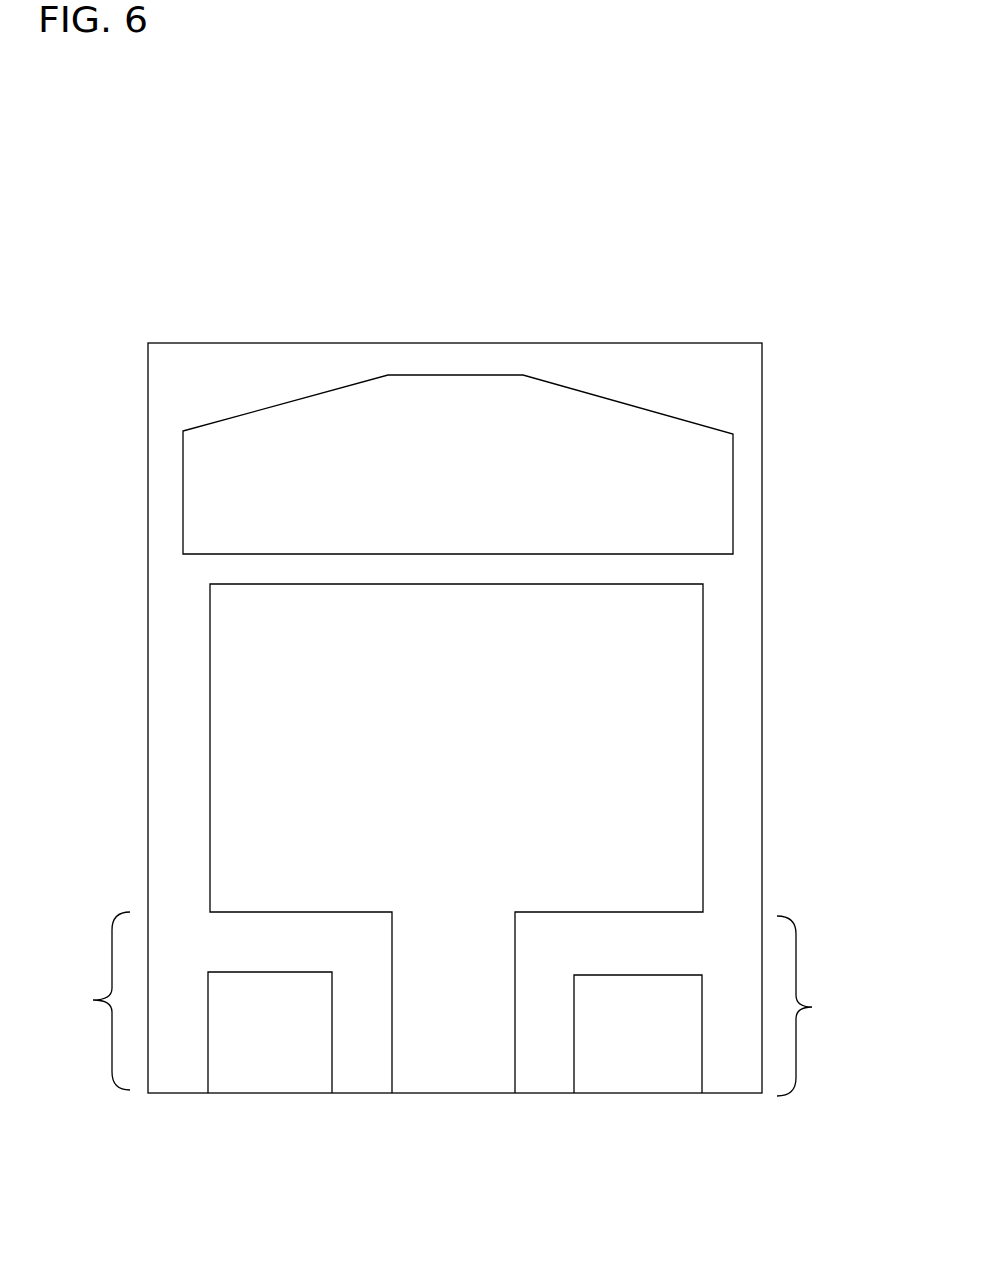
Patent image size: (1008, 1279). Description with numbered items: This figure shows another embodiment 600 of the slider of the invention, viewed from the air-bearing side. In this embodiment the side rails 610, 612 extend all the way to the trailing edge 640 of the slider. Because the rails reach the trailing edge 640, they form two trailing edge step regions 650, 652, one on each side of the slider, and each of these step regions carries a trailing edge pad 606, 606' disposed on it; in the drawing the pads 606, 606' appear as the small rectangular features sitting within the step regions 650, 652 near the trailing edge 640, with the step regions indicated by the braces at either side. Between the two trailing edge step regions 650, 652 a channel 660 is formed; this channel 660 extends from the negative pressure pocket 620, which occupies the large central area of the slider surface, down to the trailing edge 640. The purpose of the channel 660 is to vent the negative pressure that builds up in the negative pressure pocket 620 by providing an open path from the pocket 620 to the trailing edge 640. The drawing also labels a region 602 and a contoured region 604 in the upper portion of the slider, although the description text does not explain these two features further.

The embodiment 600 is at (115, 342).
The region 602 is at (679, 494).
The polygon region 604 is at (163, 477).
The trailing edge pad 606 is at (247, 1070).
The trailing edge pad 606' is at (641, 1085).
The side rail 610 is at (173, 800).
The side rail 612 is at (732, 709).
The negative pressure pocket 620 is at (640, 849).
The trailing edge 640 is at (481, 1093).
The trailing edge step region 650 is at (83, 1001).
The trailing edge step region 652 is at (823, 1006).
The channel 660 is at (442, 1062).